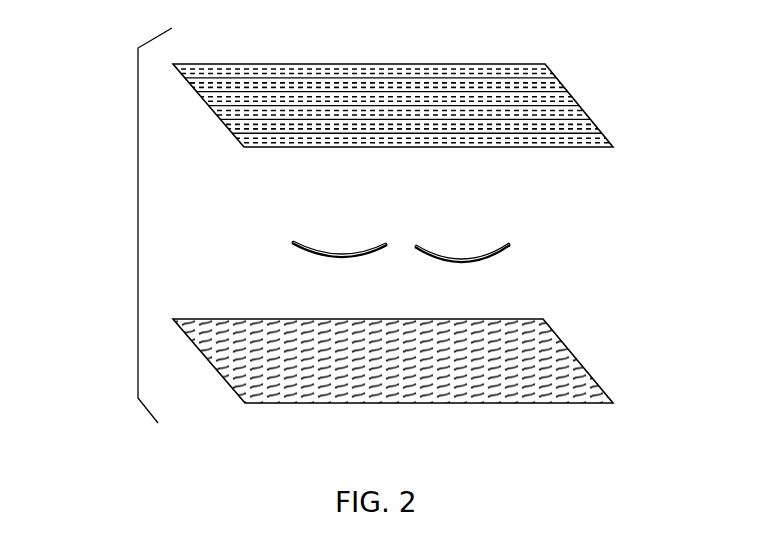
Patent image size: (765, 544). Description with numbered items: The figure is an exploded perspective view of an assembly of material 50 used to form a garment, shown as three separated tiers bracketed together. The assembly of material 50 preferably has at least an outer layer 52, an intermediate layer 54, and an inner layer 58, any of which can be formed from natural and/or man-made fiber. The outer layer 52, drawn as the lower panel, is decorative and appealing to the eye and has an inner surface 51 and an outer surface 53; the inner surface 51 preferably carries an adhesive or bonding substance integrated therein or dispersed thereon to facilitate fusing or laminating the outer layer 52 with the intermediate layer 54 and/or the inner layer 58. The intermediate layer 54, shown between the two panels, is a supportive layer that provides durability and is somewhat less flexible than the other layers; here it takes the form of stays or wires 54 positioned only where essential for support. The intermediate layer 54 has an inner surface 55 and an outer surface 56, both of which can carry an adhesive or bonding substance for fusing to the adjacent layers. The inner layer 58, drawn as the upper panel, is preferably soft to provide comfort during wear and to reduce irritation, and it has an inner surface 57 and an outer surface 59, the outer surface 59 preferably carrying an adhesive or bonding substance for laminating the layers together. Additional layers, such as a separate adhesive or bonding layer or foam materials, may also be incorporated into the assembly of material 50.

The assembly of material 50 is at (138, 223).
The inner surface 51 is at (248, 345).
The outer layer 52 is at (528, 358).
The outer surface 53 is at (277, 403).
The intermediate layer 54 is at (409, 239).
The inner surface 55 is at (493, 252).
The outer surface 56 is at (423, 253).
The inner surface 57 is at (280, 87).
The inner layer 58 is at (470, 98).
The outer surface 59 is at (285, 148).